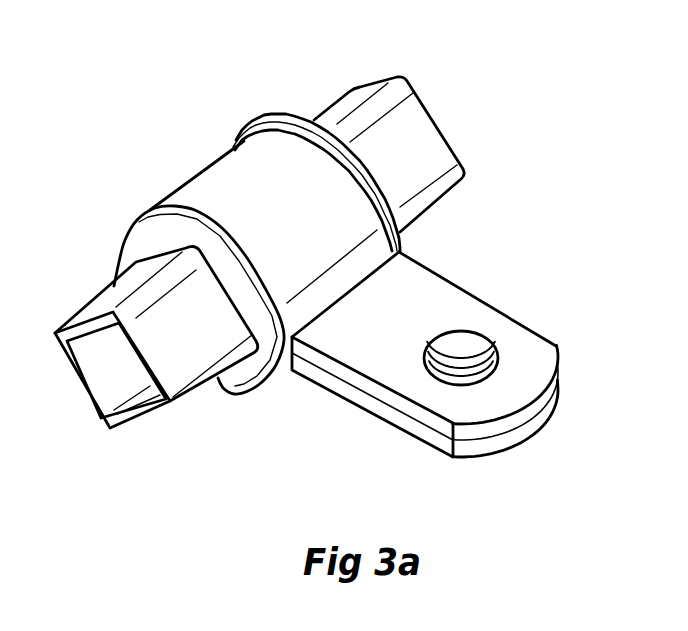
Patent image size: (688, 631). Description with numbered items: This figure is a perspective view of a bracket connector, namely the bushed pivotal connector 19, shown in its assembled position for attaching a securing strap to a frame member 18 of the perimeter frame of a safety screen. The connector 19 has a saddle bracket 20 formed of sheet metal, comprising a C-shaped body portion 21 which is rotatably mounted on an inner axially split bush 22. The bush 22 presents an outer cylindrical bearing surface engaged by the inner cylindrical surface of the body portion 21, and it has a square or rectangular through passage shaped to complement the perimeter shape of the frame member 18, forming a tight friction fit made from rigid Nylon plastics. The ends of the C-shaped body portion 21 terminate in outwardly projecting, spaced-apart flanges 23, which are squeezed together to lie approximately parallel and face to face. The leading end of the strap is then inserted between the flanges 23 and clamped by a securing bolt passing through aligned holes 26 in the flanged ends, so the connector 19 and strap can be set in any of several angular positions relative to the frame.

The frame member 18 is at (436, 193).
The bushed pivotal connector 19 is at (126, 180).
The saddle bracket 20 is at (198, 166).
The C-shaped body portion 21 is at (267, 187).
The inner axially split bush 22 is at (242, 378).
The flanges 23 is at (540, 352).
The holes 26 is at (478, 341).